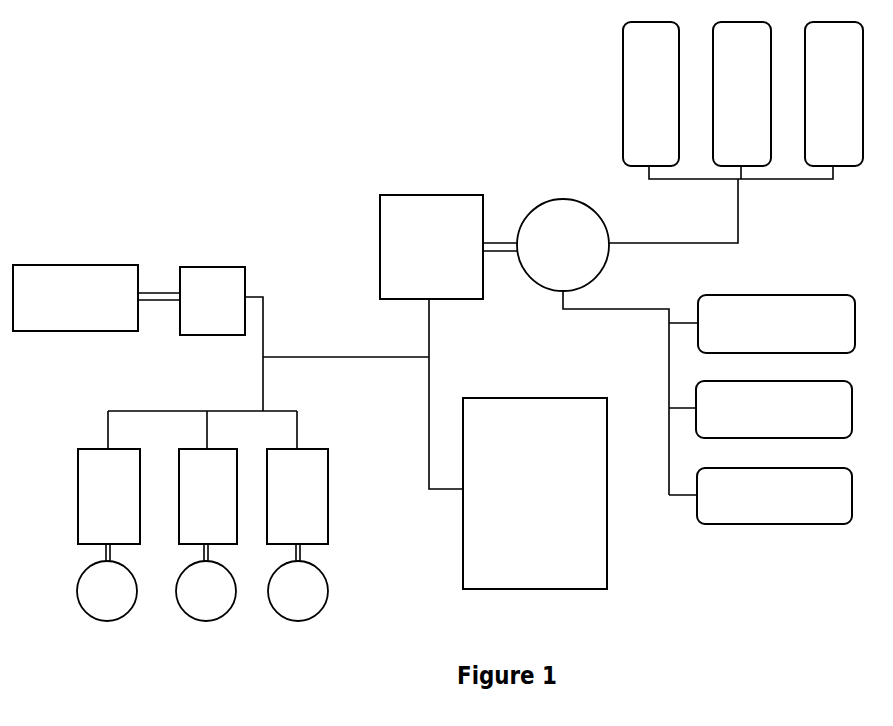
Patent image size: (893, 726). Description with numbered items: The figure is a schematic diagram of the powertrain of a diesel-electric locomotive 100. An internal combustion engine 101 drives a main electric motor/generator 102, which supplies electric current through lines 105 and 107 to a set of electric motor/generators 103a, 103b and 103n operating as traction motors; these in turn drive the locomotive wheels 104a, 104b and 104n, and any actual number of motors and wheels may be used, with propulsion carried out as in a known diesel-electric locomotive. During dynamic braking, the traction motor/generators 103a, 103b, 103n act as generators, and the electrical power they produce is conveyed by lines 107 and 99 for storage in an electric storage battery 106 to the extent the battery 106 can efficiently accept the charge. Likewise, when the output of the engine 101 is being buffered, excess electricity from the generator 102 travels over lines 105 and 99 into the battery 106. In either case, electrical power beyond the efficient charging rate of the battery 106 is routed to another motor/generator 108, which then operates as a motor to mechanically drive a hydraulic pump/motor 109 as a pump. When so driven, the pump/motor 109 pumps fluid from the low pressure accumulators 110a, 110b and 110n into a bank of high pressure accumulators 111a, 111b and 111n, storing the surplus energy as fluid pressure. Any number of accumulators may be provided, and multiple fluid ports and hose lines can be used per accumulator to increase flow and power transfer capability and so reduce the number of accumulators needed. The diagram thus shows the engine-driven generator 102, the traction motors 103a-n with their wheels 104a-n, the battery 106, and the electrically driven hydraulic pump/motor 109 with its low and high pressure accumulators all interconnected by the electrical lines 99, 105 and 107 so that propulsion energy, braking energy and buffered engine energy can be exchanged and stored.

The diesel-electric locomotive 100 is at (292, 166).
The line 99 is at (332, 357).
The internal combustion engine 101 is at (75, 298).
The main electric motor/generator 102 is at (212, 301).
The line 105 is at (281, 330).
The line 107 is at (272, 381).
The electric motor/generator 103a is at (109, 496).
The electric motor/generator 103b is at (208, 496).
The electric motor/generator 103n is at (297, 496).
The wheel 104a is at (107, 591).
The wheel 104b is at (206, 591).
The wheel 104n is at (298, 591).
The electric storage battery 106 is at (535, 493).
The motor/generator 108 is at (431, 247).
The hydraulic pump/motor 109 is at (563, 245).
The low pressure accumulator 110a is at (651, 94).
The low pressure accumulator 110b is at (742, 94).
The low pressure accumulator 110n is at (834, 94).
The high pressure accumulator 111a is at (776, 324).
The high pressure accumulator 111b is at (774, 409).
The high pressure accumulator 111n is at (774, 496).